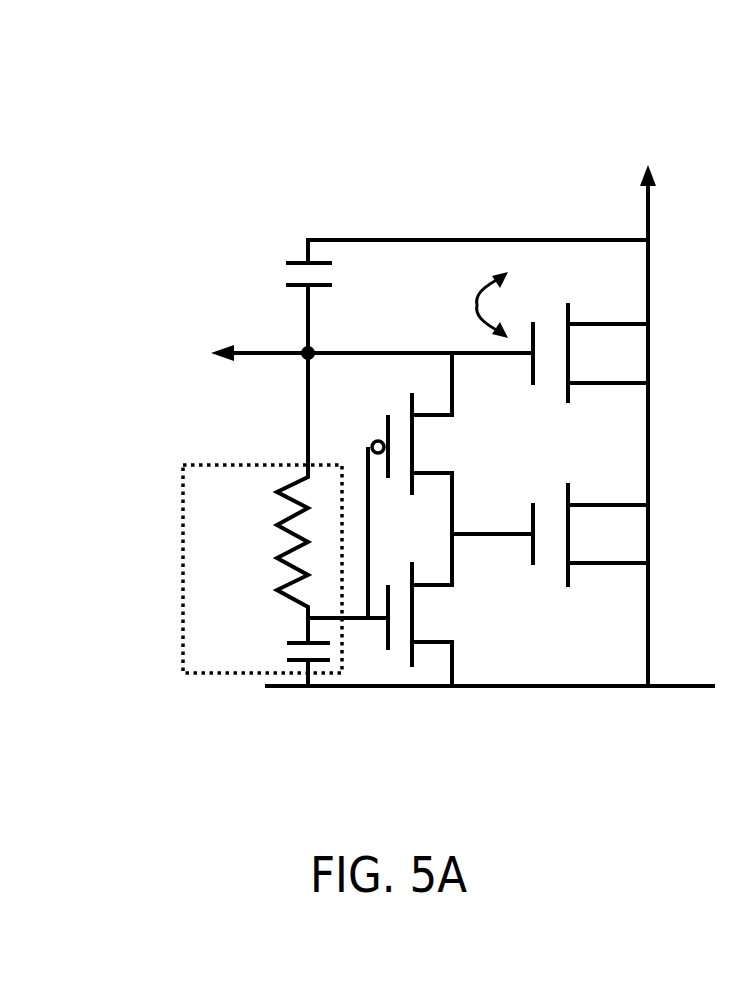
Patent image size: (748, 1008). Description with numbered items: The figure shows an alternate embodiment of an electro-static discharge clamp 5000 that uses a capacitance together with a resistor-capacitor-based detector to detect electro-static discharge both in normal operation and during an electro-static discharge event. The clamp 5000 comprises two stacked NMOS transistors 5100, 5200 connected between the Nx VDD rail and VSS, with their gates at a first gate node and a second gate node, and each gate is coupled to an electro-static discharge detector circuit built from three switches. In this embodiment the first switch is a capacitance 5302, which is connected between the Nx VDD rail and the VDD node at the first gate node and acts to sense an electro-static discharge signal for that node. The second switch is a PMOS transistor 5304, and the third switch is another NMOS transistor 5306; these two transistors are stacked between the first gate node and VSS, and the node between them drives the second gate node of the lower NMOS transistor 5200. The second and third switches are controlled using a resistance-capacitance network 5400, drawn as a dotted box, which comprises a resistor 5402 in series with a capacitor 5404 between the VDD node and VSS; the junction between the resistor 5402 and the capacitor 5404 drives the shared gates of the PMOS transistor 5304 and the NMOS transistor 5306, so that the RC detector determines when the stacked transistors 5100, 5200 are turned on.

The electro-static discharge clamp 5000 is at (674, 118).
The switch 1 capacitance 5302 is at (273, 272).
The NMOS transistor 5100 is at (612, 353).
The NMOS transistor 5200 is at (612, 535).
The PMOS transistor 5304 is at (423, 444).
The NMOS transistor 5306 is at (431, 614).
The resistance-capacitance 5400 is at (224, 569).
The resistor 5402 is at (260, 542).
The capacitor 5404 is at (272, 650).